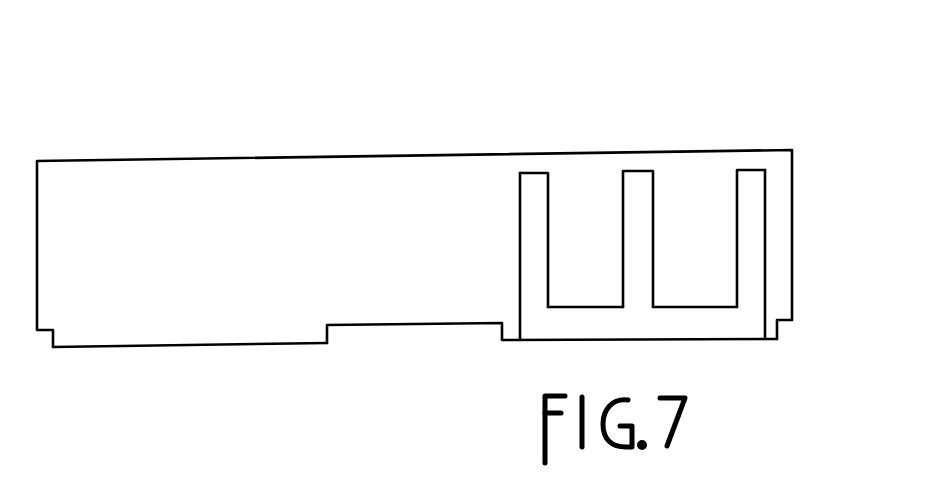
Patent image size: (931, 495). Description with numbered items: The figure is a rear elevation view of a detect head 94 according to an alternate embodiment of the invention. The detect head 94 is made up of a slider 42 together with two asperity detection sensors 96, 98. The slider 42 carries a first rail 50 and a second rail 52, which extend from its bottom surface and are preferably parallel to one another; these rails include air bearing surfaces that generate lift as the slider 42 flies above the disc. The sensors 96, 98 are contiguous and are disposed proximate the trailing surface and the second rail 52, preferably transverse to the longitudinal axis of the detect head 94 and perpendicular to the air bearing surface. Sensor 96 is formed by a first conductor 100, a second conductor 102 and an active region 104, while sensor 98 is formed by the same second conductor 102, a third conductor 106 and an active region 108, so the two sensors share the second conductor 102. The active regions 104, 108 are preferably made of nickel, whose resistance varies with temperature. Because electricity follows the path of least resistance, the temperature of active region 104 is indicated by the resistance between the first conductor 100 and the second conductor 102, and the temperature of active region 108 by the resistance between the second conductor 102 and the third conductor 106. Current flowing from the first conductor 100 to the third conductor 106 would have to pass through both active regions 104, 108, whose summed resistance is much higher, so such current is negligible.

The slider 42 is at (427, 245).
The first rail 50 is at (157, 348).
The second rail 52 is at (777, 341).
The detect head 94 is at (640, 215).
The asperity detection sensor 96 is at (521, 261).
The asperity detection sensor 98 is at (766, 229).
The first conductor 100 is at (519, 197).
The second conductor 102 is at (622, 186).
The active region 104 is at (577, 306).
The third conductor 106 is at (736, 184).
The active region 108 is at (695, 306).